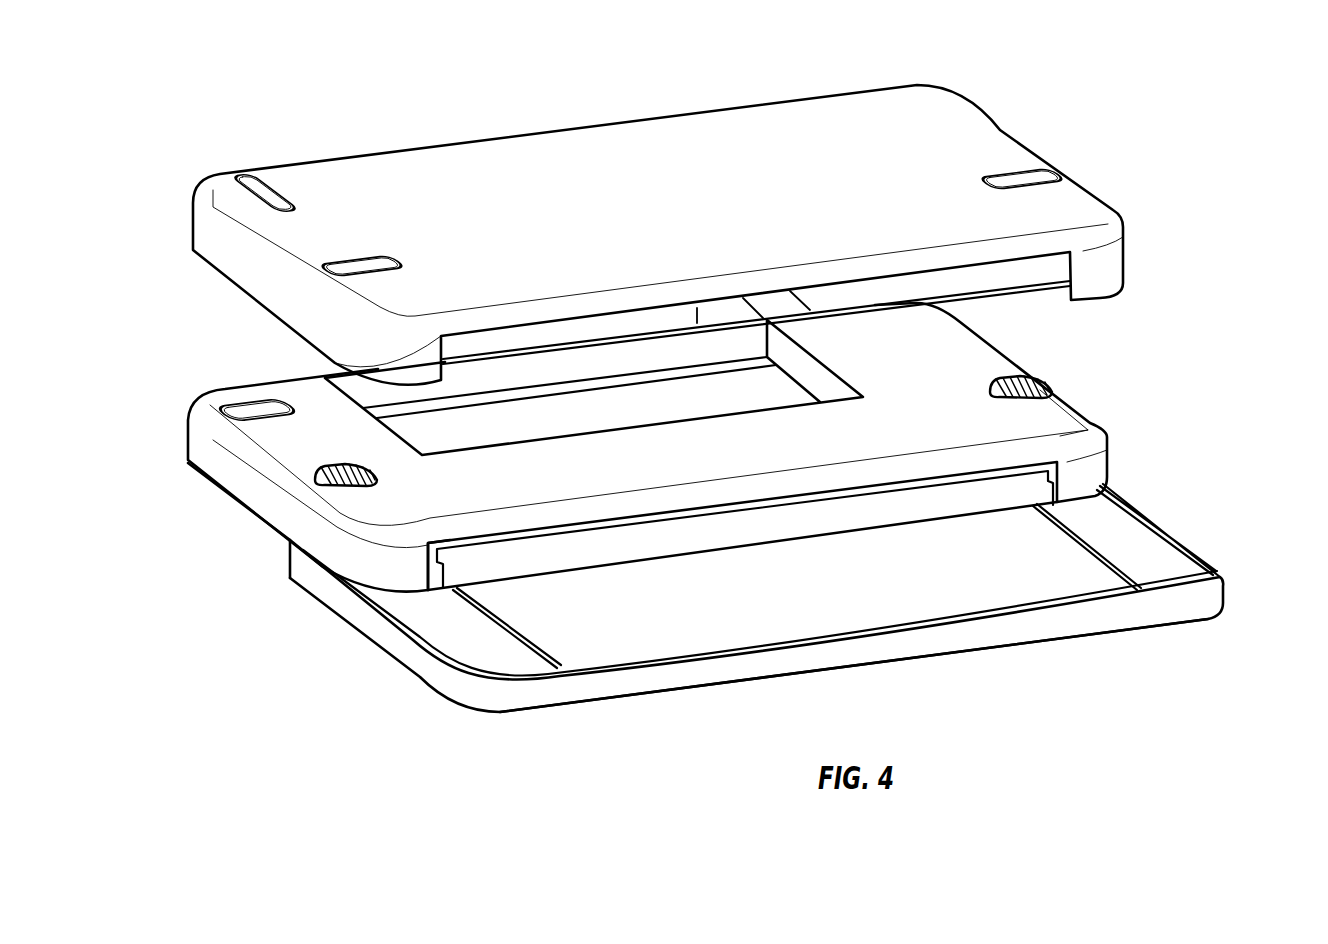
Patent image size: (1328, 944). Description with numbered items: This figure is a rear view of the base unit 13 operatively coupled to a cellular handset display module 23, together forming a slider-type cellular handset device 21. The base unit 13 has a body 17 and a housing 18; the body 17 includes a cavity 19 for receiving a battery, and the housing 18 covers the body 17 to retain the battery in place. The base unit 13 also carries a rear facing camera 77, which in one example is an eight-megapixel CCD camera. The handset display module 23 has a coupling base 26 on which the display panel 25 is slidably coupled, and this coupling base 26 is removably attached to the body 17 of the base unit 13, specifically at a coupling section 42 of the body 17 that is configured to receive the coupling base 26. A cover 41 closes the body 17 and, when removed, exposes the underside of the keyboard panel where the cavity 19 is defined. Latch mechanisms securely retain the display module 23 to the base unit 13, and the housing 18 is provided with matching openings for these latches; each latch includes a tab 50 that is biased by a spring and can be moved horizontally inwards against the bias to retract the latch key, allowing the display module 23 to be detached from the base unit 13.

The base unit 13 is at (176, 178).
The body 17 is at (1093, 416).
The housing 18 is at (888, 103).
The cavity 19 is at (787, 390).
The cellular handset device 21 is at (1212, 202).
The display module 23 is at (1206, 558).
The display panel 25 is at (1152, 617).
The coupling base 26 is at (787, 530).
The cover 41 is at (1065, 412).
The coupling section 42 is at (428, 592).
The tab 50 is at (318, 474).
The rear facing camera 77 is at (240, 404).